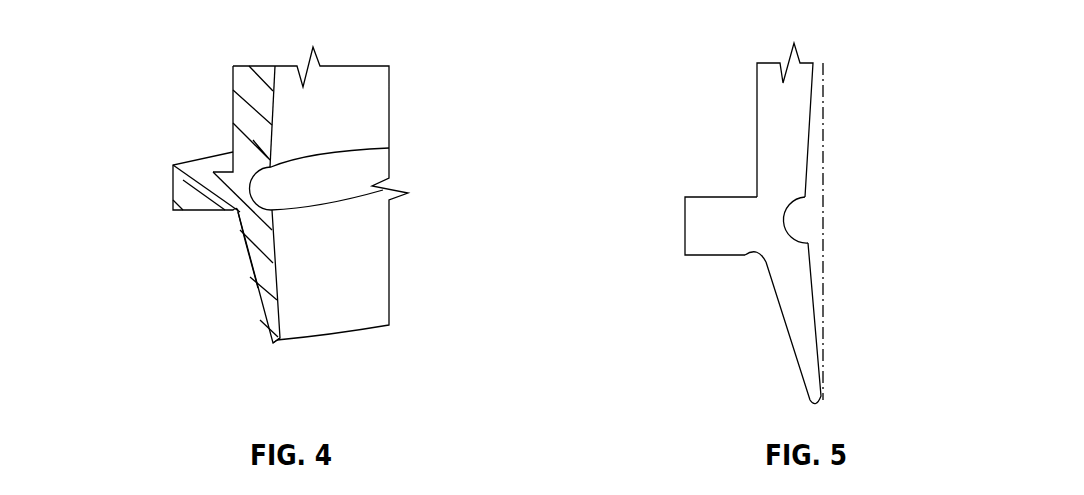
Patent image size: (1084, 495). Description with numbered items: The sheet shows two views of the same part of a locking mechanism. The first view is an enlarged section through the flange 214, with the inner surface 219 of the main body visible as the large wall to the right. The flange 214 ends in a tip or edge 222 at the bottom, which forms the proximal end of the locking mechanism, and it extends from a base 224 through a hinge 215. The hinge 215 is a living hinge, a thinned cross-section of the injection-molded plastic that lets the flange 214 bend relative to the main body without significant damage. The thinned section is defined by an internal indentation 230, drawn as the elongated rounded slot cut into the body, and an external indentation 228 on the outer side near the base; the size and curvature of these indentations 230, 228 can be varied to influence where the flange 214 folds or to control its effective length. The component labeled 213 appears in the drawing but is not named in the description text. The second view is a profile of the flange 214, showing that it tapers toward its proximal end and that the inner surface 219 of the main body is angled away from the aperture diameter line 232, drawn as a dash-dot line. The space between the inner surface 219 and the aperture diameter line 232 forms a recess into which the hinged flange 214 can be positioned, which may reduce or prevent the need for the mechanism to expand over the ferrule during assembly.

In FIG. 4, the flange / mounting portion 213 is at (173, 178).
In FIG. 5, the flange / mounting portion 213 is at (683, 212).
In FIG. 4, the flange 214 is at (267, 307).
In FIG. 5, the flange 214 is at (790, 337).
In FIG. 4, the hinge 215 is at (257, 270).
In FIG. 4, the inner surface 219 is at (367, 277).
In FIG. 5, the inner surface 219 is at (812, 111).
In FIG. 4, the tip or edge 222 is at (270, 343).
In FIG. 4, the base 224 is at (240, 230).
In FIG. 4, the external indentation 228 is at (237, 215).
In FIG. 5, the external indentation 228 is at (767, 268).
In FIG. 4, the internal indentation 230 is at (367, 170).
In FIG. 5, the internal indentation 230 is at (782, 222).
In FIG. 5, the aperture diameter line 232 is at (823, 183).